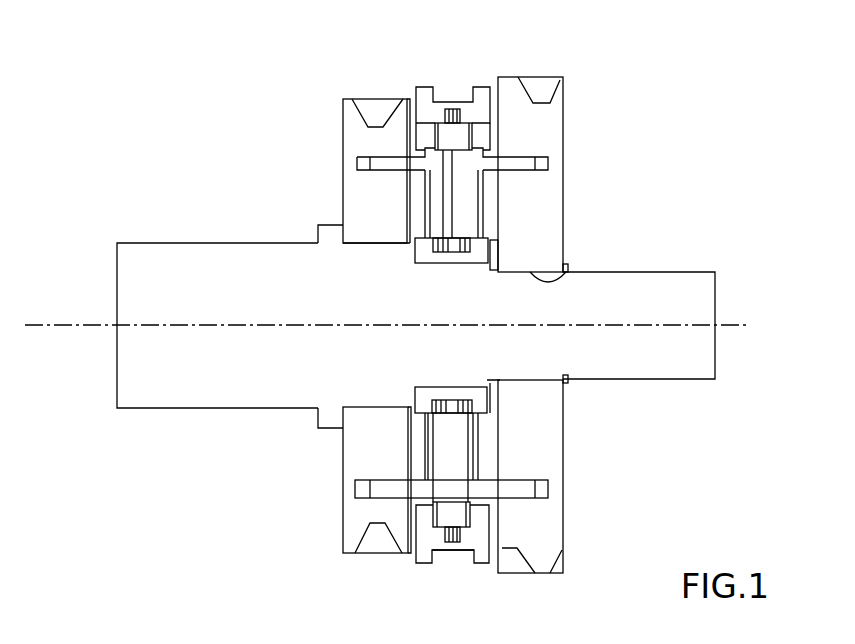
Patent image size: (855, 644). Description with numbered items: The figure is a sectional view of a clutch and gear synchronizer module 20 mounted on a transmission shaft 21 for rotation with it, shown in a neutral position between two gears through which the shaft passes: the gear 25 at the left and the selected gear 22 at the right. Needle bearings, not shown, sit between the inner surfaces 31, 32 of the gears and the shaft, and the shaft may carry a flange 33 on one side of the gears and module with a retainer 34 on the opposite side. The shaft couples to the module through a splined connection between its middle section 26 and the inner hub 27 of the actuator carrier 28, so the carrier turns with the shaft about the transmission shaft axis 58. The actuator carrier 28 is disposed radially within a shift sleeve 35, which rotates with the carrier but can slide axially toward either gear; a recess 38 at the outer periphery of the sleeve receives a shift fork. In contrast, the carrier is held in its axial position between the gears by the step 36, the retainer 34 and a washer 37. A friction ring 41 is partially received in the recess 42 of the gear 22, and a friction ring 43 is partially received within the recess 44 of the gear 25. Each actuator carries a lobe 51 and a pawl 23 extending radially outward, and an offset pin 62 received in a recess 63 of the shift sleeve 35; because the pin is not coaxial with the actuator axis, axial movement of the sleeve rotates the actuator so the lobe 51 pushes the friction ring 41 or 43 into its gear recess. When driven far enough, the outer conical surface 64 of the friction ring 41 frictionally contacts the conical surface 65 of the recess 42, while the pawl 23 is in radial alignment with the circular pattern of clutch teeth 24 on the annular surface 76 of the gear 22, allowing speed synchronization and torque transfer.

The clutch and gear synchronizer module 20 is at (452, 72).
The transmission shaft 21 is at (145, 418).
The selected gear 22 is at (563, 528).
The pawl 23 is at (440, 206).
The clutch teeth 24 is at (487, 198).
The gear 25 is at (338, 528).
The middle section 26 is at (455, 382).
The inner hub 27 is at (410, 407).
The actuator carrier 28 is at (411, 518).
The inner surface 31 is at (378, 244).
The inner surface 32 is at (568, 276).
The flange 33 is at (318, 226).
The retainer 34 is at (568, 381).
The shift sleeve 35 is at (413, 574).
The step 36 is at (410, 245).
The washer 37 is at (492, 394).
The recess 38 is at (465, 552).
The friction ring 41 is at (505, 177).
The recess 42 is at (541, 150).
The friction ring 43 is at (386, 136).
The recess 44 is at (358, 158).
The lobe 51 is at (457, 158).
The transmission shaft axis 58 is at (727, 327).
The offset pin 62 is at (453, 108).
The recess 63 is at (456, 544).
The outer conical surface 64 is at (517, 498).
The conical surface 65 is at (502, 152).
The annular surface 76 is at (497, 218).